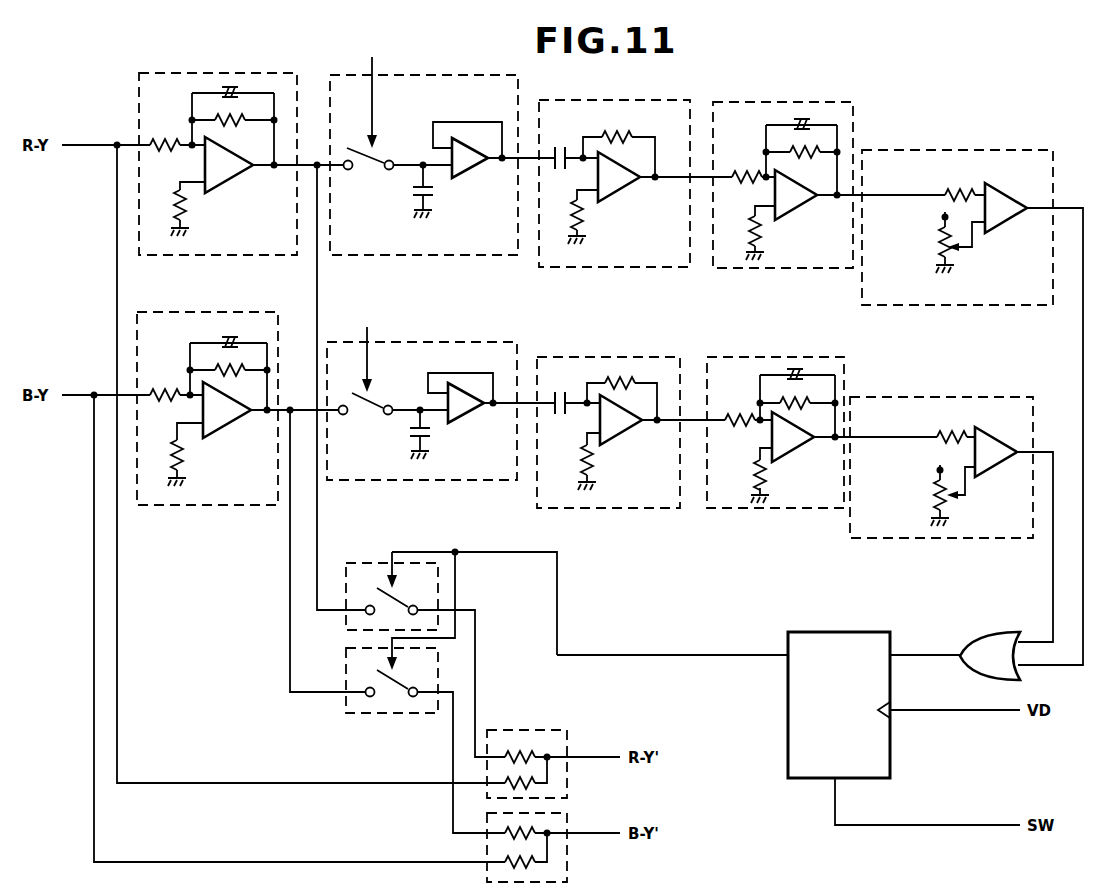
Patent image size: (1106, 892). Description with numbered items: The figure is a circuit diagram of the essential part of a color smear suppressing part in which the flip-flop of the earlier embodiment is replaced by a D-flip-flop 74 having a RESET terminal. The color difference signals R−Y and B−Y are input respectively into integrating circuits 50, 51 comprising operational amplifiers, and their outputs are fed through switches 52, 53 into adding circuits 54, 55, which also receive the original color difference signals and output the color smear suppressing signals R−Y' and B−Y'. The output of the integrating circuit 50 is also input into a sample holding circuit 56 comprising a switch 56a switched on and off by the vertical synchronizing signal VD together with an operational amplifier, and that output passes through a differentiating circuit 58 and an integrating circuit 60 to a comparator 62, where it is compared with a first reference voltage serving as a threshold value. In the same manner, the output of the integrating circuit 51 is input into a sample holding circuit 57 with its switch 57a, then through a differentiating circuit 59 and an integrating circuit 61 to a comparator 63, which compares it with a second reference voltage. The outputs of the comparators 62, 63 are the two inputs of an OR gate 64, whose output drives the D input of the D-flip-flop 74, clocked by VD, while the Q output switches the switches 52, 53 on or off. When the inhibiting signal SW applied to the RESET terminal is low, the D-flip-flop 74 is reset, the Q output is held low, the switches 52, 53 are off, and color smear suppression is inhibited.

The integrating circuit 50 is at (226, 255).
The integrating circuit 51 is at (213, 505).
The switch 52 is at (382, 563).
The switch 53 is at (368, 713).
The adding circuit 54 is at (528, 730).
The adding circuit 55 is at (567, 821).
The sample holding circuit 56 is at (417, 171).
The switch 56a is at (370, 172).
The sample holding circuit 57 is at (422, 418).
The switch 57a is at (368, 418).
The differentiating circuit 58 is at (612, 267).
The differentiating circuit 59 is at (630, 508).
The integrating circuit 60 is at (793, 268).
The integrating circuit 61 is at (790, 508).
The comparator 62 is at (950, 305).
The comparator 63 is at (898, 538).
The OR gate 64 is at (994, 632).
The D-flip-flop 74 is at (833, 632).